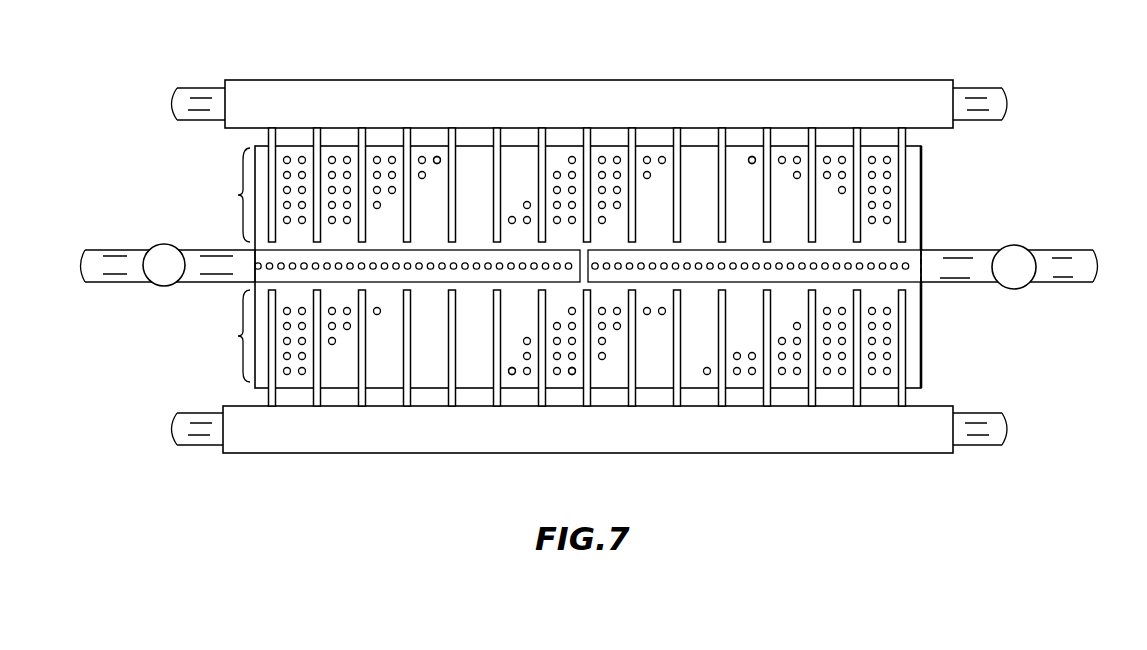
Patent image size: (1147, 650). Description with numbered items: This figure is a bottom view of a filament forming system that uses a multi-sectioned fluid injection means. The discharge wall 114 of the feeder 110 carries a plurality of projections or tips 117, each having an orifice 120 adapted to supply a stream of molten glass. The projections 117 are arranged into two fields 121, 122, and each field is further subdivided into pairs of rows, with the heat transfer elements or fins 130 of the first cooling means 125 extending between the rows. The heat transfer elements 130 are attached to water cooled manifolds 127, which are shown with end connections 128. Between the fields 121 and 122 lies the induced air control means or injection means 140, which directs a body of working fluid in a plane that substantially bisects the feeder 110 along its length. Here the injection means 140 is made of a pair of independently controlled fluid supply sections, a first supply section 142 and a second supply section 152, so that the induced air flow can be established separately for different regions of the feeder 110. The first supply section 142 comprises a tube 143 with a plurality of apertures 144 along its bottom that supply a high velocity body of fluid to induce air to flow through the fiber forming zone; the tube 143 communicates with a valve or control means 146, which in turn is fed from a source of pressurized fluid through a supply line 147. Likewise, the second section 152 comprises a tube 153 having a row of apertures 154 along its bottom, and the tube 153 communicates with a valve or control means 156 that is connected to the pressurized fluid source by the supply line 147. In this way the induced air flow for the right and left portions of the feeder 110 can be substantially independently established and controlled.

The feeder 110 is at (944, 186).
The discharge wall 114 is at (873, 298).
The projections or tips 117 is at (437, 157).
The orifice 120 is at (392, 157).
The field 121 is at (226, 195).
The field 122 is at (224, 336).
The first cooling means 125 is at (348, 79).
The water cooled manifolds 127 is at (897, 80).
The header conduit 128 is at (987, 88).
The heat transfer elements or fins 130 is at (583, 142).
The induced air control means or injection means 140 is at (148, 243).
The first fluid supply section 142 is at (181, 323).
The tube 143 is at (216, 283).
The apertures 144 is at (270, 267).
The valve or control means 146 is at (162, 286).
The supply line 147 is at (105, 283).
The second fluid supply section 152 is at (992, 334).
The tube 153 is at (972, 285).
The apertures 154 is at (773, 268).
The valve or control means 156 is at (1040, 233).